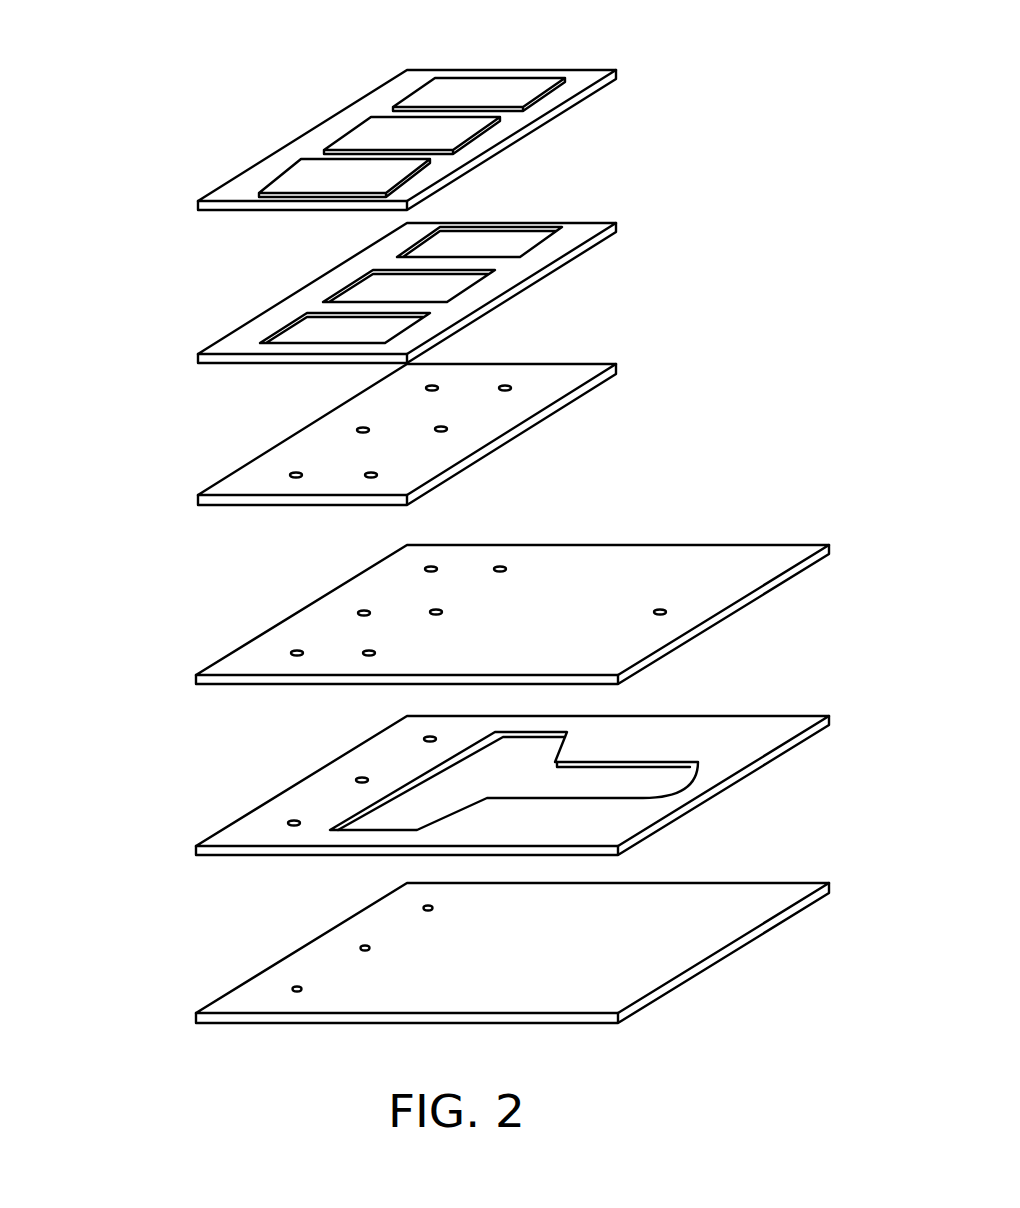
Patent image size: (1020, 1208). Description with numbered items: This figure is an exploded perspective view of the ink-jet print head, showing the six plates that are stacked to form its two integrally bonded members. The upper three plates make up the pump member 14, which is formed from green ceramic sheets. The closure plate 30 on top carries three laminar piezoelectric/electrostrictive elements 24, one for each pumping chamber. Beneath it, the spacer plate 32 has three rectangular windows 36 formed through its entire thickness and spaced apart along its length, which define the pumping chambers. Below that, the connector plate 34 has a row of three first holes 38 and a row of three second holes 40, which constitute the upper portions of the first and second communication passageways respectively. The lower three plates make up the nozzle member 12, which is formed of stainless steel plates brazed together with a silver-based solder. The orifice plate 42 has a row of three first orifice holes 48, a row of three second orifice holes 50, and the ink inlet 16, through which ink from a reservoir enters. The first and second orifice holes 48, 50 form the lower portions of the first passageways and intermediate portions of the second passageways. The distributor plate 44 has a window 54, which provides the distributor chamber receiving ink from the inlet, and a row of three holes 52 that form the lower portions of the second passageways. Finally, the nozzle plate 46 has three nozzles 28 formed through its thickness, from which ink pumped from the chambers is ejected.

The nozzle member 12 is at (88, 735).
The pump member 14 is at (88, 200).
The ink inlet 16 is at (665, 610).
The piezoelectric/electrostrictive elements 24 is at (368, 128).
The nozzles 28 is at (420, 903).
The closure plate 30 is at (187, 202).
The spacer plate 32 is at (187, 350).
The connector plate 34 is at (190, 482).
The rectangular windows 36 is at (487, 243).
The first holes 38 is at (505, 386).
The second holes 40 is at (432, 386).
The orifice plate 42 is at (183, 688).
The distributor plate 44 is at (187, 850).
The nozzle plate 46 is at (183, 985).
The first orifice holes 48 is at (500, 565).
The second orifice holes 50 is at (432, 565).
The holes 52 is at (427, 737).
The window 54 is at (520, 783).